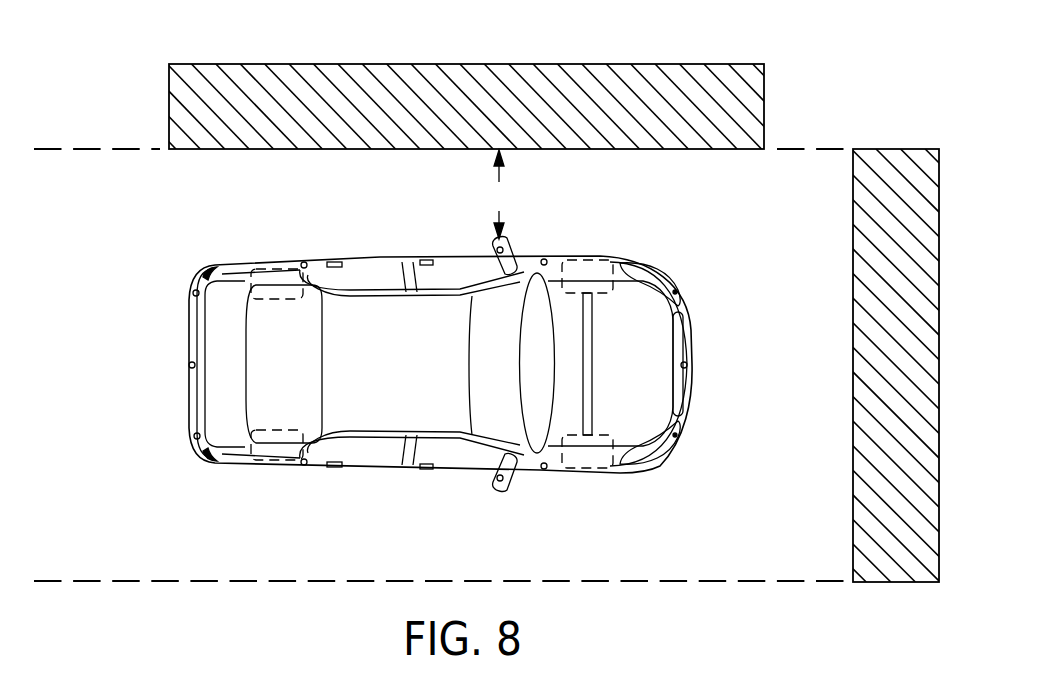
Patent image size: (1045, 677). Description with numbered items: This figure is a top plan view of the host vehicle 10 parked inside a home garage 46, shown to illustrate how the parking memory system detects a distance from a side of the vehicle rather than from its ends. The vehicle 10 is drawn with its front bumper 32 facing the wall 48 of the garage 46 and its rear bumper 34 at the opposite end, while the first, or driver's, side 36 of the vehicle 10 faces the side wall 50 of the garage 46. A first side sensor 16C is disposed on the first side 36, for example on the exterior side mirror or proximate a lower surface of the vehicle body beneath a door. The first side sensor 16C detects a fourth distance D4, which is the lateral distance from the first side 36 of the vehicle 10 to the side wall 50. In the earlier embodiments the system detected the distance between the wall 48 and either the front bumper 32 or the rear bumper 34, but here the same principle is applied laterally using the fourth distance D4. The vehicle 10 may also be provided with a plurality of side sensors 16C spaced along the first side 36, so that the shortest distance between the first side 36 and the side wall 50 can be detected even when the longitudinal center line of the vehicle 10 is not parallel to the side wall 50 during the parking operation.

The host vehicle 10 is at (437, 366).
The first side sensor 16C is at (507, 243).
The front bumper 32 is at (688, 308).
The rear bumper 34 is at (188, 402).
The first side 36 is at (368, 256).
The home garage 46 is at (103, 195).
The wall 48 is at (853, 188).
The side wall 50 is at (238, 150).
The fourth distance D4 is at (498, 194).